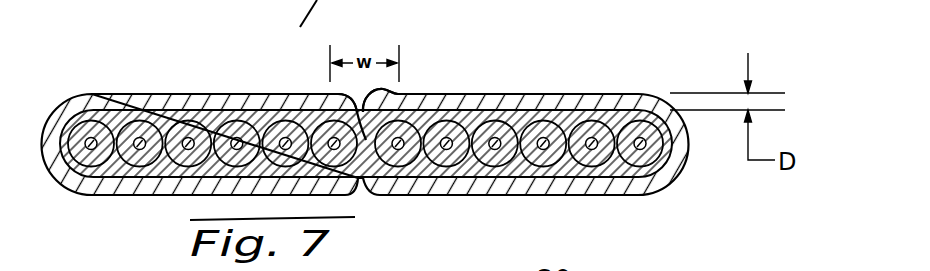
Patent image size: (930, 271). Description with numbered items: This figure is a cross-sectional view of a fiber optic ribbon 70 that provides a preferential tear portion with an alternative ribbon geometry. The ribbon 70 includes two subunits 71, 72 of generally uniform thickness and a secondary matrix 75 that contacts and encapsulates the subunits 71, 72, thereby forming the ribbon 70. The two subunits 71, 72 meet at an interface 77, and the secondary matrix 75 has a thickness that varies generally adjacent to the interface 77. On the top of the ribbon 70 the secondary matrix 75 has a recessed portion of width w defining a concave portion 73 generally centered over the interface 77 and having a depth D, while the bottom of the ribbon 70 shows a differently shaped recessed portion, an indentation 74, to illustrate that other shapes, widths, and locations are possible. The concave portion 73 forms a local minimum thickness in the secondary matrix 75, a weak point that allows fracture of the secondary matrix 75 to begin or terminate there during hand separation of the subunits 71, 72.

The ribbon 70 is at (359, 118).
The subunit 71 is at (188, 140).
The subunit 72 is at (577, 117).
The concave portion 73 is at (387, 90).
The indentation 74 is at (360, 176).
The secondary matrix 75 is at (601, 95).
The interface 77 is at (350, 107).